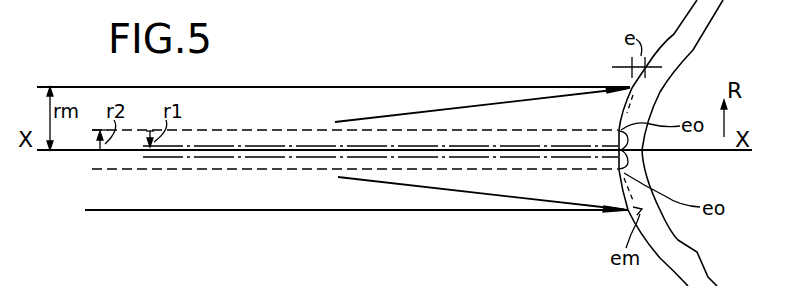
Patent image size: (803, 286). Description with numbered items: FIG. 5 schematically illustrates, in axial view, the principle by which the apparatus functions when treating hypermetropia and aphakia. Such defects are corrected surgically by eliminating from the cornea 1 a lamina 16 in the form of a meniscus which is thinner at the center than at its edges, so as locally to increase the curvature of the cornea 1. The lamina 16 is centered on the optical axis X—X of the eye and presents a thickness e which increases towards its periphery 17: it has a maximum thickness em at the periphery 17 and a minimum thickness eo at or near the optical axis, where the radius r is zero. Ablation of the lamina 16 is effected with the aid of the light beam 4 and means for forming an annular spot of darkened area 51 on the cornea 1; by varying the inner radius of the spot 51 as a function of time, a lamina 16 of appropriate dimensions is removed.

The cornea 1 is at (672, 42).
The light beam 4 is at (466, 106).
The lamina 16 is at (645, 92).
The periphery 17 is at (628, 213).
The annular spot of darkened area 51 is at (630, 155).